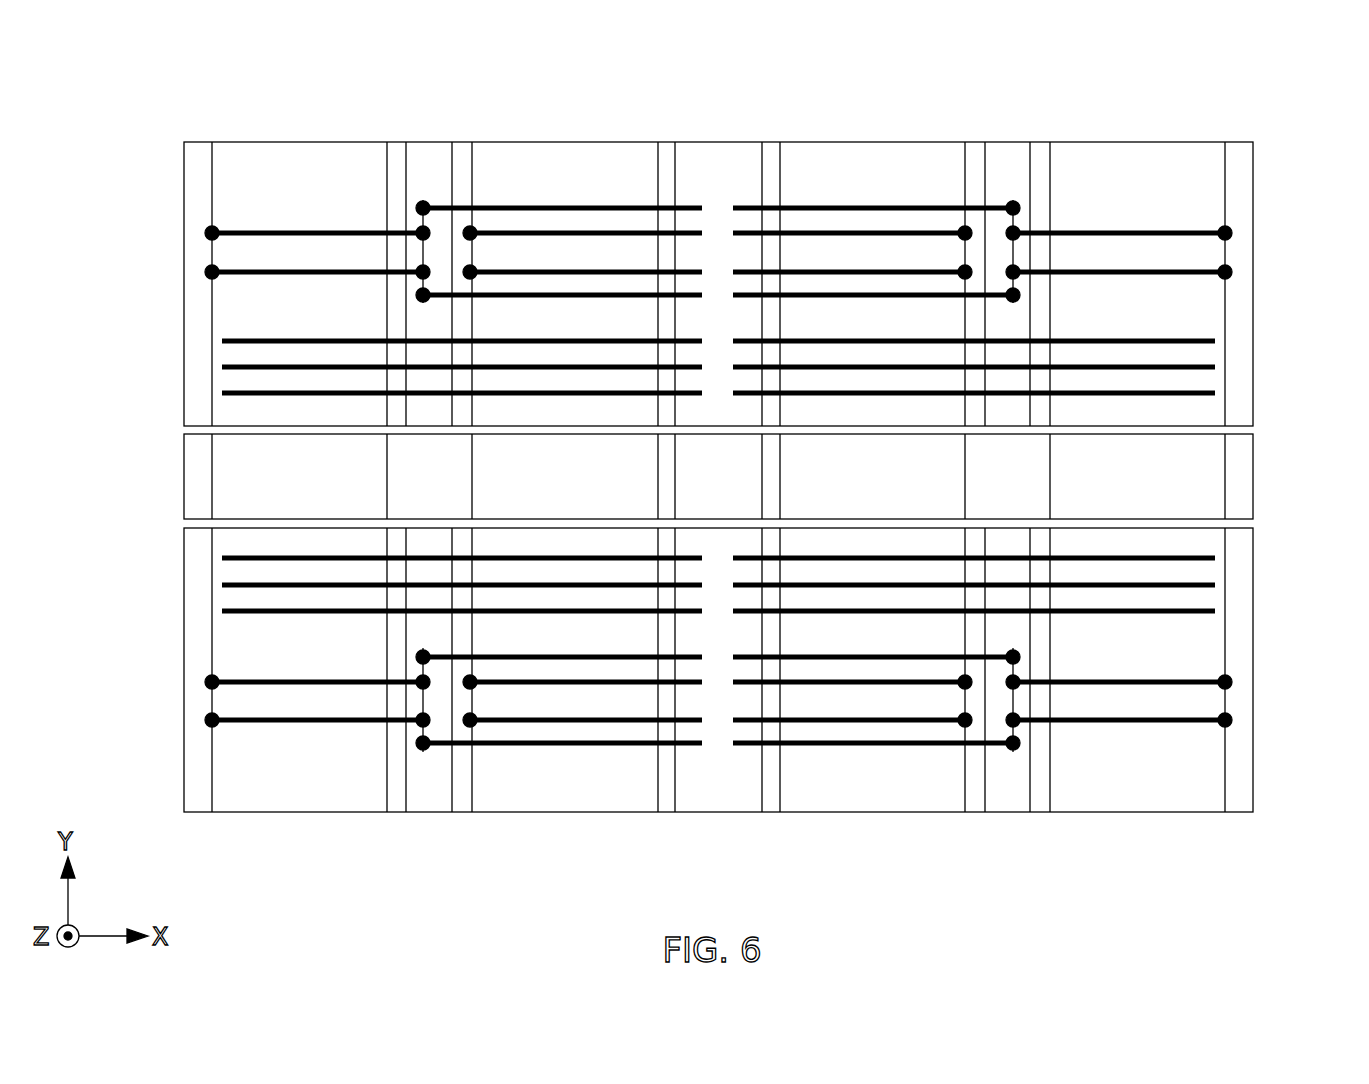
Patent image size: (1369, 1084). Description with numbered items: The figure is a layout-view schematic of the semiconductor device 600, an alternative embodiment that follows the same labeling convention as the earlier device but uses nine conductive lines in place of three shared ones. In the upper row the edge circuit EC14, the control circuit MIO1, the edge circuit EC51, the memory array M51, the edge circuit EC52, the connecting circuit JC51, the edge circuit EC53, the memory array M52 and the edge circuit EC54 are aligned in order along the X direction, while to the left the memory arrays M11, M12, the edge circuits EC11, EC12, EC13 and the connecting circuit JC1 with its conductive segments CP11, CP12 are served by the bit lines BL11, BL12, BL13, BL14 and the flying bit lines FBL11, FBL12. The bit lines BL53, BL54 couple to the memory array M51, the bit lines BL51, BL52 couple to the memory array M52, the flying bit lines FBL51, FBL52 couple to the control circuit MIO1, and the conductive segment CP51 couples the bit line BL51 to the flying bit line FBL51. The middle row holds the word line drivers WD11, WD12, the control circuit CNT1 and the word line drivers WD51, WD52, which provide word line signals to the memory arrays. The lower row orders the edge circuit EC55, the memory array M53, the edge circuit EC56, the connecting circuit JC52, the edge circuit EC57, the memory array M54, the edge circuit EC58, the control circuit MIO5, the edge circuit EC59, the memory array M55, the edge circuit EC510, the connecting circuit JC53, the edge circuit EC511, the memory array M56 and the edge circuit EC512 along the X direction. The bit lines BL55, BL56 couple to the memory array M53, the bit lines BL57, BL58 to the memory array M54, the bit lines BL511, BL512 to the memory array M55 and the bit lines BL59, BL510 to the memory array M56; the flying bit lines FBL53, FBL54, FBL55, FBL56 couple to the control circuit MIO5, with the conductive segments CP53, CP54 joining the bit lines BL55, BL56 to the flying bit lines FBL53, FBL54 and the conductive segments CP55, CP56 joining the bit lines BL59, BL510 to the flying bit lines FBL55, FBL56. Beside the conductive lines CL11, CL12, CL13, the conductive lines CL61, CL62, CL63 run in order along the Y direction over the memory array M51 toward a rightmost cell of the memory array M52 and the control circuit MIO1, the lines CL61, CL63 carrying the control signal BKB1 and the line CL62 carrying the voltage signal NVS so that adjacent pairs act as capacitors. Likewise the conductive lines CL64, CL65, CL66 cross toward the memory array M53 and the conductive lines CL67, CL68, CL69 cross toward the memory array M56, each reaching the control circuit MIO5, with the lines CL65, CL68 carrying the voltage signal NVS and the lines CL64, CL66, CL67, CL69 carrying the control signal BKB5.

The semiconductor device 600 is at (128, 71).
The edge circuit EC11 is at (199, 142).
The edge circuit EC12 is at (376, 147).
The edge circuit EC13 is at (463, 147).
The edge circuit EC14 is at (672, 147).
The edge circuit EC51 is at (766, 160).
The edge circuit EC52 is at (966, 147).
The edge circuit EC53 is at (1047, 163).
The edge circuit EC54 is at (1239, 147).
The edge circuit EC55 is at (196, 812).
The edge circuit EC56 is at (372, 812).
The edge circuit EC57 is at (463, 803).
The edge circuit EC58 is at (672, 815).
The edge circuit EC59 is at (763, 803).
The edge circuit EC510 is at (970, 807).
The edge circuit EC511 is at (1043, 797).
The edge circuit EC512 is at (1240, 812).
The connecting circuit JC1 is at (440, 147).
The connecting circuit JC51 is at (997, 147).
The connecting circuit JC52 is at (437, 803).
The connecting circuit JC53 is at (997, 805).
The connection pattern CP11 is at (453, 147).
The connection pattern CP12 is at (418, 290).
The conductive segment CP51 is at (1032, 173).
The conductive segment CP53 is at (418, 657).
The conductive segment CP54 is at (420, 790).
The conductive segment CP55 is at (1070, 700).
The conductive segment CP56 is at (1018, 750).
The bit line BL11 is at (208, 230).
The bit line BL12 is at (208, 268).
The bit line BL13 is at (596, 230).
The bit line BL14 is at (620, 268).
The bit line BL51 is at (1230, 228).
The bit line BL52 is at (1230, 267).
The bit line BL53 is at (837, 230).
The bit line BL54 is at (812, 268).
The bit line BL55 is at (208, 680).
The bit line BL56 is at (208, 718).
The bit line BL57 is at (625, 686).
The bit line BL58 is at (600, 725).
The bit line BL59 is at (1230, 678).
The bit line BL510 is at (1230, 716).
The bit line BL511 is at (810, 725).
The bit line BL512 is at (837, 686).
The flying bit line FBL11 is at (559, 159).
The flying bit line FBL12 is at (568, 299).
The flying bit line FBL51 is at (933, 205).
The flying bit line FBL52 is at (875, 299).
The flying bit line FBL53 is at (572, 656).
The flying bit line FBL54 is at (505, 748).
The flying bit line FBL55 is at (879, 656).
The flying bit line FBL56 is at (937, 748).
The conductive line CL11 is at (222, 393).
The conductive line CL12 is at (222, 367).
The conductive line CL13 is at (222, 341).
The conductive line CL61 is at (1195, 398).
The conductive line CL62 is at (1125, 365).
The conductive line CL63 is at (1150, 340).
The conductive line CL64 is at (222, 611).
The conductive line CL65 is at (222, 585).
The conductive line CL66 is at (222, 558).
The conductive line CL67 is at (1195, 616).
The conductive line CL68 is at (1125, 583).
The conductive line CL69 is at (1150, 557).
The control signal BKB1 is at (268, 340).
The control signal BKB5 is at (262, 557).
The voltage signal NVS is at (325, 365).
The memory array M11 is at (280, 197).
The memory array M12 is at (538, 188).
The memory array M51 is at (848, 188).
The memory array M52 is at (1103, 197).
The memory array M53 is at (280, 783).
The memory array M54 is at (538, 790).
The memory array M55 is at (848, 790).
The memory array M56 is at (1103, 783).
The control circuit MIO1 is at (686, 188).
The control circuit MIO5 is at (686, 790).
The word line driver WD11 is at (268, 497).
The word line driver WD12 is at (526, 497).
The word line driver WD51 is at (836, 497).
The word line driver WD52 is at (1091, 497).
The control circuit CNT1 is at (684, 497).